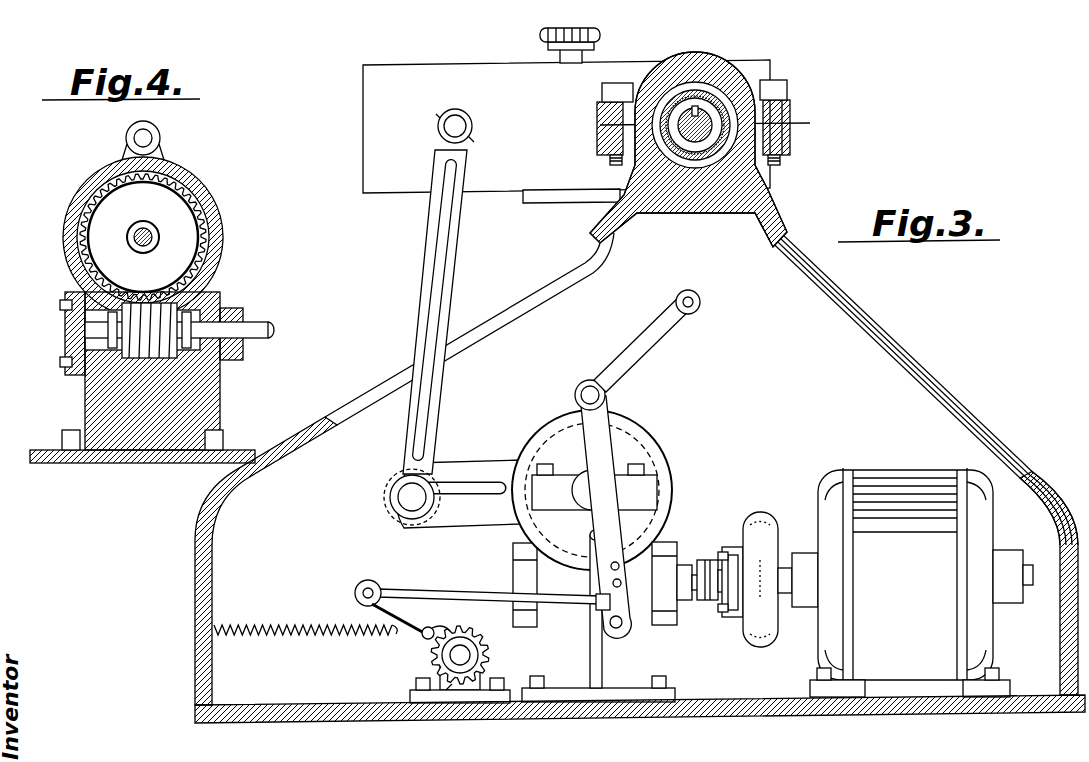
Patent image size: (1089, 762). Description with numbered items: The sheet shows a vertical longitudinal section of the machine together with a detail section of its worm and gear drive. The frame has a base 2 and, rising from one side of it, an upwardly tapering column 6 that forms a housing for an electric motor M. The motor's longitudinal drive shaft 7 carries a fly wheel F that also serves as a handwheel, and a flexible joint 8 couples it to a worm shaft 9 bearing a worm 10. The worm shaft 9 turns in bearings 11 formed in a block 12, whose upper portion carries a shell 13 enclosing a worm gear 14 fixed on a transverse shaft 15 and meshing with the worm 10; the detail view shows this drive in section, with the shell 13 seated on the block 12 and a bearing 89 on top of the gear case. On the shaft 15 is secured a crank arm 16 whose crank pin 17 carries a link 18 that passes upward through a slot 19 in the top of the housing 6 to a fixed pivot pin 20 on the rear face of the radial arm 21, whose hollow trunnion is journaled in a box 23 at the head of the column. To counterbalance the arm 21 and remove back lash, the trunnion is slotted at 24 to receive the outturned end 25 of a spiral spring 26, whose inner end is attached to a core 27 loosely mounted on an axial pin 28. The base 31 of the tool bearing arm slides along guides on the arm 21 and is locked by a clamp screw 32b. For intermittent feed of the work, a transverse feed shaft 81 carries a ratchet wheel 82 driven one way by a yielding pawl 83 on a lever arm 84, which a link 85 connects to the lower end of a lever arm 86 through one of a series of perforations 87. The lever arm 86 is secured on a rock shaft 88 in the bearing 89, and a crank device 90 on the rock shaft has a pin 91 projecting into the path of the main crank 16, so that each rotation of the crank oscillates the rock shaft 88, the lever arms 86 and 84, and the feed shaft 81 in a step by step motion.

In FIG. 3, the base 2 is at (740, 722).
In FIG. 3, the column 6 is at (636, 463).
In FIG. 3, the drive shaft 7 is at (786, 568).
In FIG. 3, the flexible joint 8 is at (730, 614).
In FIG. 4, the worm shaft 9 is at (270, 331).
In FIG. 3, the worm shaft 9 is at (685, 603).
In FIG. 4, the worm 10 is at (90, 372).
In FIG. 4, the bearings 11 is at (226, 362).
In FIG. 4, the block 12 is at (200, 404).
In FIG. 4, the shell 13 is at (224, 240).
In FIG. 4, the worm gear 14 is at (186, 222).
In FIG. 4, the transverse shaft 15 is at (130, 241).
In FIG. 3, the transverse shaft 15 is at (568, 472).
In FIG. 3, the crank arm 16 is at (498, 528).
In FIG. 3, the crank pin 17 is at (398, 502).
In FIG. 3, the link 18 is at (418, 342).
In FIG. 3, the slot 19 is at (360, 402).
In FIG. 3, the pivot pin 20 is at (472, 125).
In FIG. 3, the radial arm 21 is at (410, 185).
In FIG. 3, the box 23 is at (725, 98).
In FIG. 3, the longitudinal slot 24 is at (704, 68).
In FIG. 3, the outturned end of spiral spring 25 is at (690, 82).
In FIG. 3, the spiral spring 26 is at (790, 100).
In FIG. 3, the core 27 is at (799, 159).
In FIG. 3, the axial pin 28 is at (790, 130).
In FIG. 3, the base of tool arm 31 is at (575, 201).
In FIG. 3, the clamp screw 32b is at (545, 36).
In FIG. 3, the feed shaft 81 is at (448, 658).
In FIG. 3, the ratchet wheel 82 is at (489, 656).
In FIG. 3, the pawl 83 is at (425, 641).
In FIG. 3, the lever arm 84 is at (365, 613).
In FIG. 3, the link 85 is at (430, 600).
In FIG. 3, the lever arm 86 is at (606, 436).
In FIG. 3, the perforations 87 is at (613, 583).
In FIG. 3, the rock shaft 88 is at (606, 396).
In FIG. 4, the bearing 89 is at (127, 149).
In FIG. 3, the crank device 90 is at (646, 346).
In FIG. 3, the pin 91 is at (701, 302).
In FIG. 3, the fly wheel F is at (765, 515).
In FIG. 3, the electric motor M is at (922, 490).